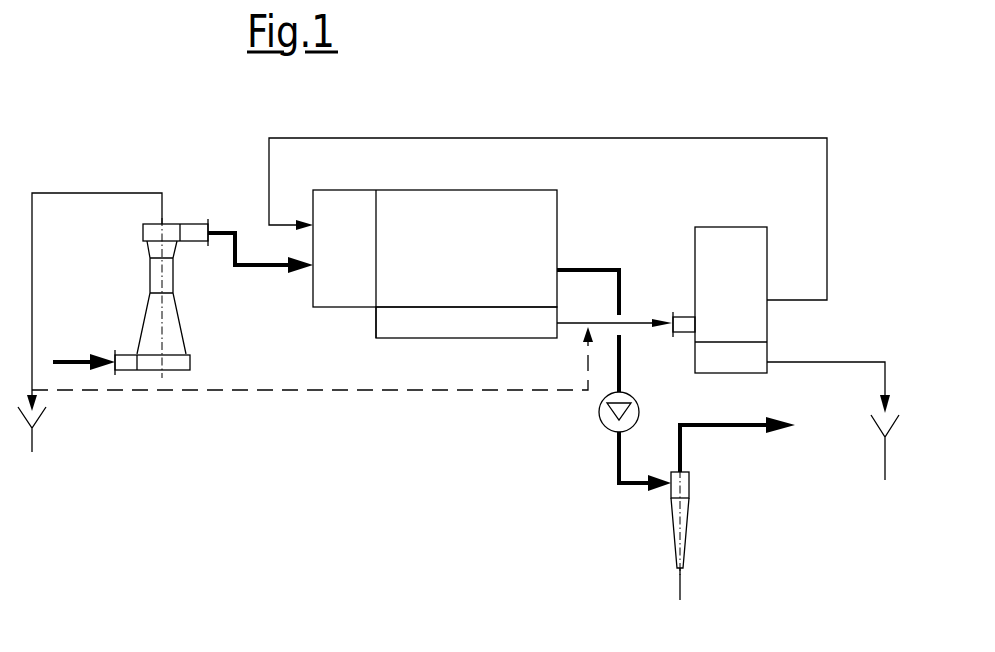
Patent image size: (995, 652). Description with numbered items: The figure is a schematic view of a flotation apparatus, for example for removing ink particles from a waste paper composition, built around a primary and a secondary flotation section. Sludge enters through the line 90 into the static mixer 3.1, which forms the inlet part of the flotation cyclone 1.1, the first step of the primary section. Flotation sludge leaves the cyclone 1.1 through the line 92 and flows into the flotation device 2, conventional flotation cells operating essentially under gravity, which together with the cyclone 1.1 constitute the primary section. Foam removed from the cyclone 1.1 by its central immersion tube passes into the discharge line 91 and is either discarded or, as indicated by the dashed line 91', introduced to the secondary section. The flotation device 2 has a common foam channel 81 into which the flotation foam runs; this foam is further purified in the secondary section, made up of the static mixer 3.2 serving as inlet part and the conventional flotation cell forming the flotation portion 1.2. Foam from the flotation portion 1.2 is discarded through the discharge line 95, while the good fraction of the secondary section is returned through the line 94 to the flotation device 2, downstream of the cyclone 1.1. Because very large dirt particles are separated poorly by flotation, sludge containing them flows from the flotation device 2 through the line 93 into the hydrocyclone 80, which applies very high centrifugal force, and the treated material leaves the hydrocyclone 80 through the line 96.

The flotation cyclone 1.1 is at (186, 333).
The flotation portion 1.2 is at (718, 215).
The flotation device 2 is at (496, 190).
The static mixer 3.1 is at (127, 372).
The static mixer 3.2 is at (683, 335).
The hydrocyclone 80 is at (690, 540).
The foam channel 81 is at (463, 340).
The line 90 is at (69, 356).
The discharge line 91 is at (90, 300).
The dashed line 91' is at (312, 382).
The line 92 is at (258, 268).
The line 93 is at (595, 268).
The line 94 is at (350, 138).
The discharge line 95 is at (866, 362).
The line 96 is at (733, 428).